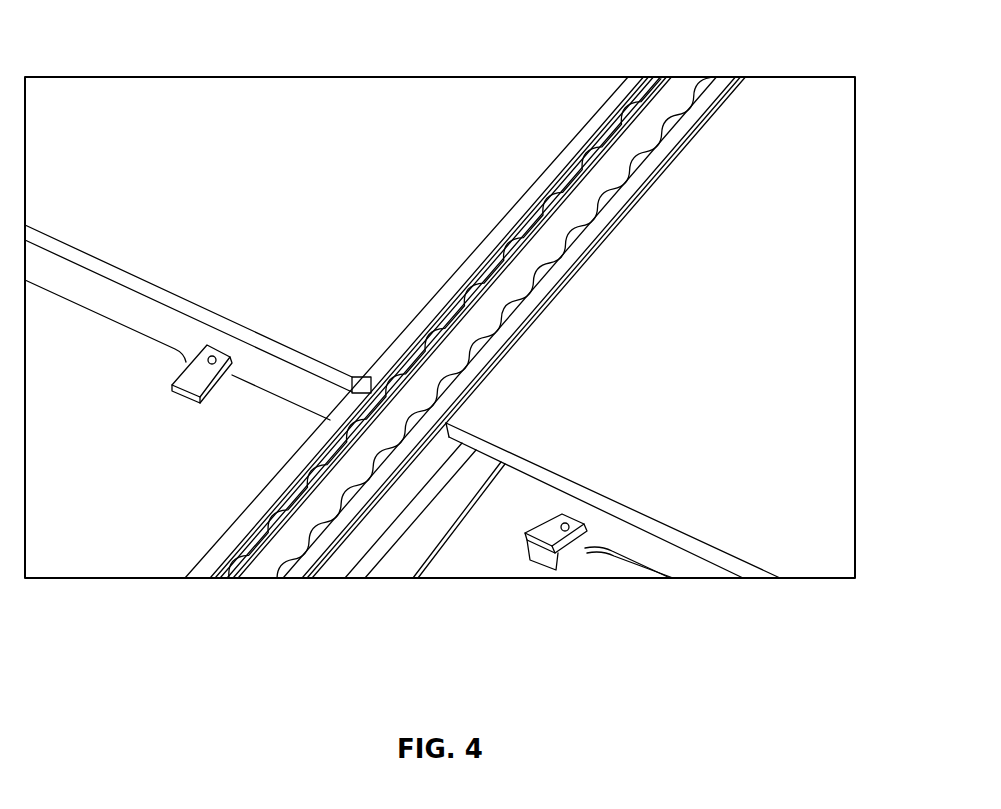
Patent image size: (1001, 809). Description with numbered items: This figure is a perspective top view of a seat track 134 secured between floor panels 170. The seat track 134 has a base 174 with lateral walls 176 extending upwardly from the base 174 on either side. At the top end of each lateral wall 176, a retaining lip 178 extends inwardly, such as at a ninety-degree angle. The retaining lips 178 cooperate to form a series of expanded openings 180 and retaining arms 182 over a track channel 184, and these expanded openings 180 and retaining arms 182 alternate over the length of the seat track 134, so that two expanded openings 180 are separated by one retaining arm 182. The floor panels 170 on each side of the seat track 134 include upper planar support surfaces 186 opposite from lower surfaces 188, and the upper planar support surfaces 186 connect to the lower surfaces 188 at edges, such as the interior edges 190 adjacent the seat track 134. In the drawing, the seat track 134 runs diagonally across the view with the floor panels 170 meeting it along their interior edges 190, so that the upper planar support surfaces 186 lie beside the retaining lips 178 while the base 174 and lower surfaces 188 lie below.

The floor panels 170 is at (450, 93).
The upper planar support surfaces 186 is at (523, 103).
The base 174 is at (437, 530).
The lower surfaces 188 is at (270, 357).
The interior edges 190 is at (614, 93).
The lateral walls 176 is at (332, 445).
The retaining arms 182 is at (307, 483).
The retaining lip 178 is at (243, 560).
The expanded openings 180 is at (270, 550).
The seat track 134 is at (502, 250).
The track channel 184 is at (672, 88).